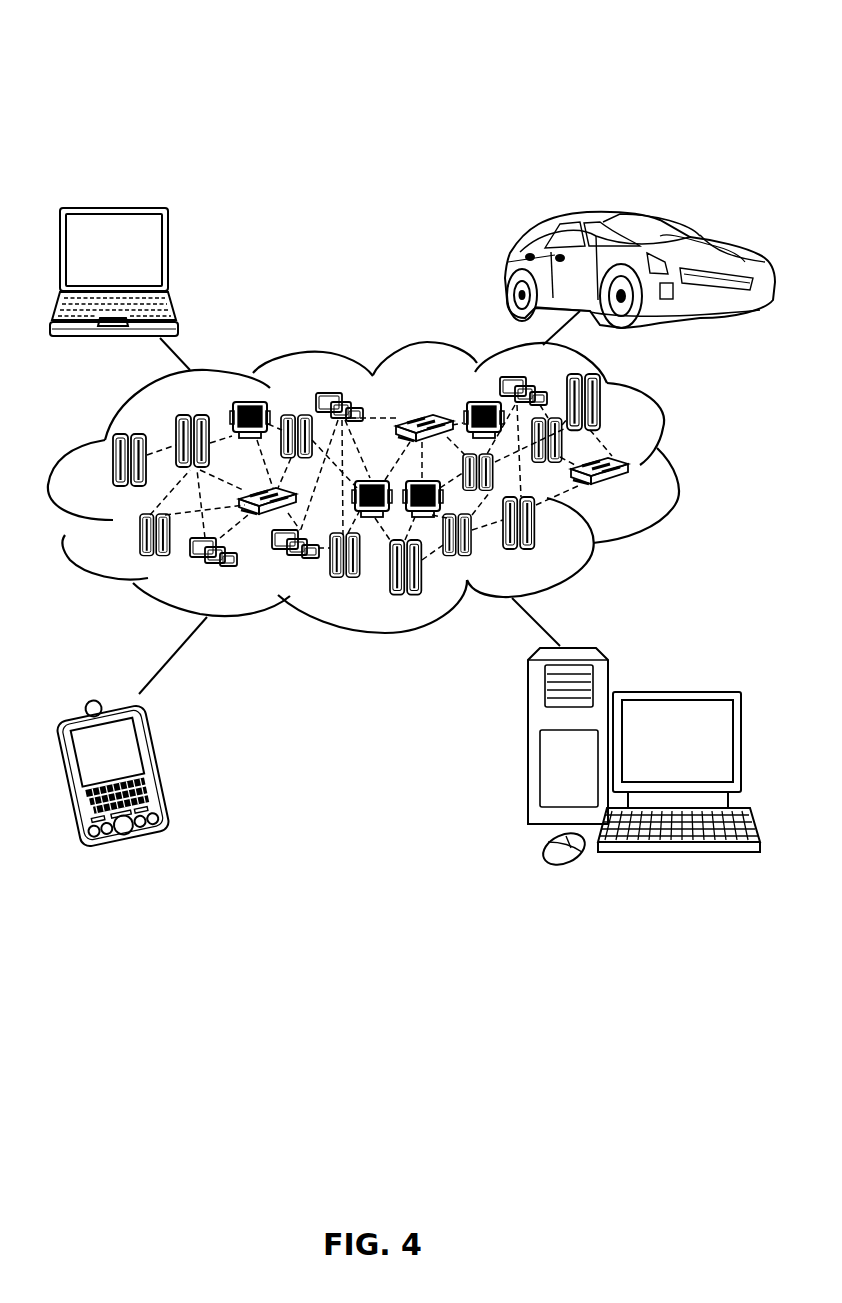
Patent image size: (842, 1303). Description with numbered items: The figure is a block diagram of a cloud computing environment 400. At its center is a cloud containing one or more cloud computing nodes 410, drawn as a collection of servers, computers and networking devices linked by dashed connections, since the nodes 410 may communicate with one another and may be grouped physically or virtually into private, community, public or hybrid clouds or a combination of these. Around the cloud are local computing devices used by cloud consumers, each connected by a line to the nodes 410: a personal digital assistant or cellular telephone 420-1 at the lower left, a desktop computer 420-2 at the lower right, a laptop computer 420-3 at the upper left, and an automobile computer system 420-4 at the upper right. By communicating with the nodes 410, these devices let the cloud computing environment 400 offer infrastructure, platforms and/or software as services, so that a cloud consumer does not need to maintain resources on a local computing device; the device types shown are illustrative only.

The cloud computing environment 400 is at (299, 64).
The cloud computing nodes 410 is at (632, 492).
The personal digital assistant (PDA) or cellular telephone 420-1 is at (160, 760).
The desktop computer 420-2 is at (676, 692).
The laptop computer 420-3 is at (168, 261).
The automobile computer system 420-4 is at (507, 268).